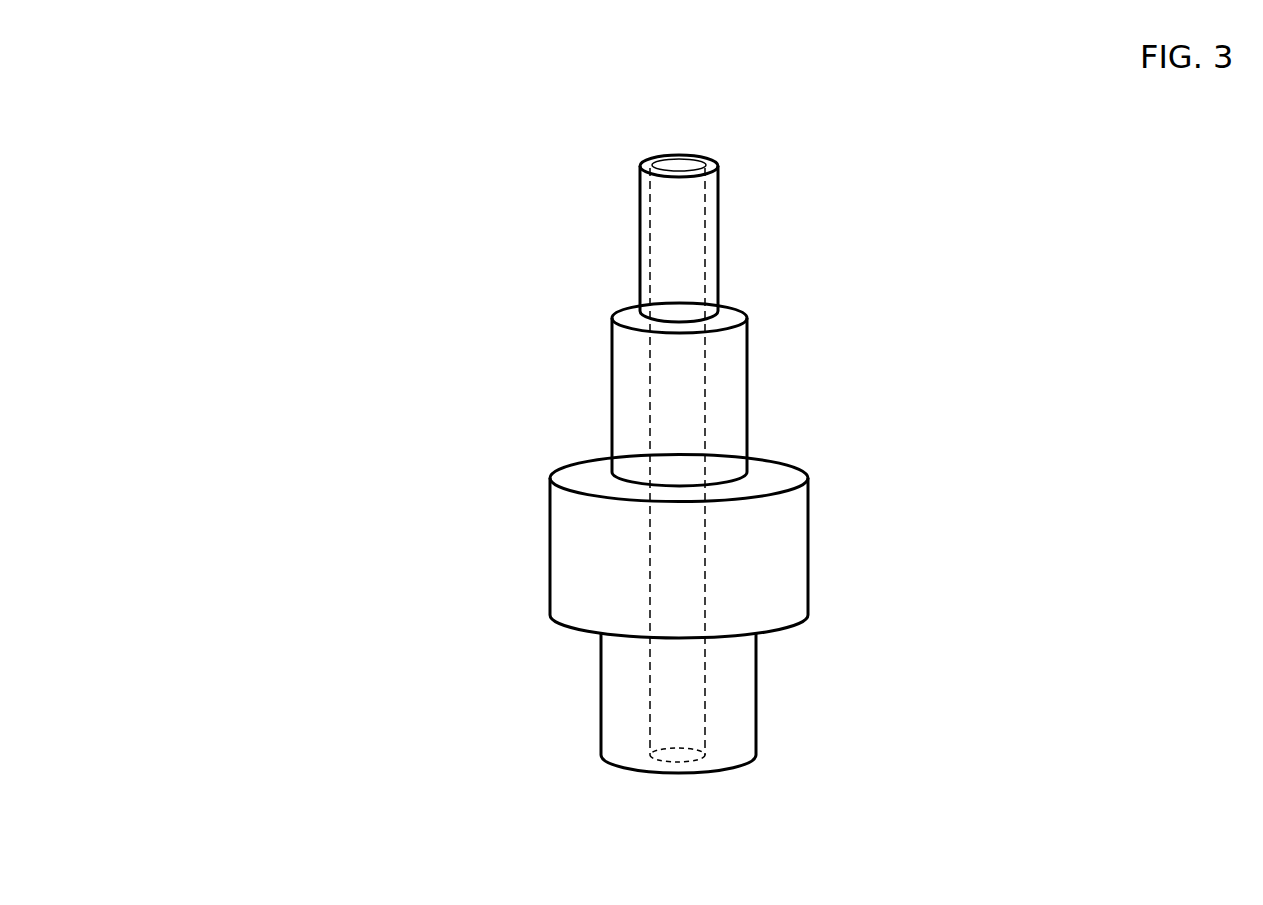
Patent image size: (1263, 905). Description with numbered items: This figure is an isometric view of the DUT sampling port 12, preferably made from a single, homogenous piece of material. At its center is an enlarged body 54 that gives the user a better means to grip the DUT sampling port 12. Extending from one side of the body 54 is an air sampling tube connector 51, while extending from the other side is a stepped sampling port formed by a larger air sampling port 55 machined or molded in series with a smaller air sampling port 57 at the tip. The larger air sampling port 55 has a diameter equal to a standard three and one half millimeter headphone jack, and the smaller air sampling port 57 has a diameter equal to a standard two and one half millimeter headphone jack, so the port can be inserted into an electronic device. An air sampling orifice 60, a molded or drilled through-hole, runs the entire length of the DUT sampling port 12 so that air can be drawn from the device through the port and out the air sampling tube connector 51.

The DUT sampling port 12 is at (518, 500).
The smaller air sampling port 57 is at (717, 227).
The larger air sampling port 55 is at (725, 400).
The body 54 is at (755, 553).
The air sampling tube connector 51 is at (737, 717).
The air sampling orifice 60 is at (655, 683).